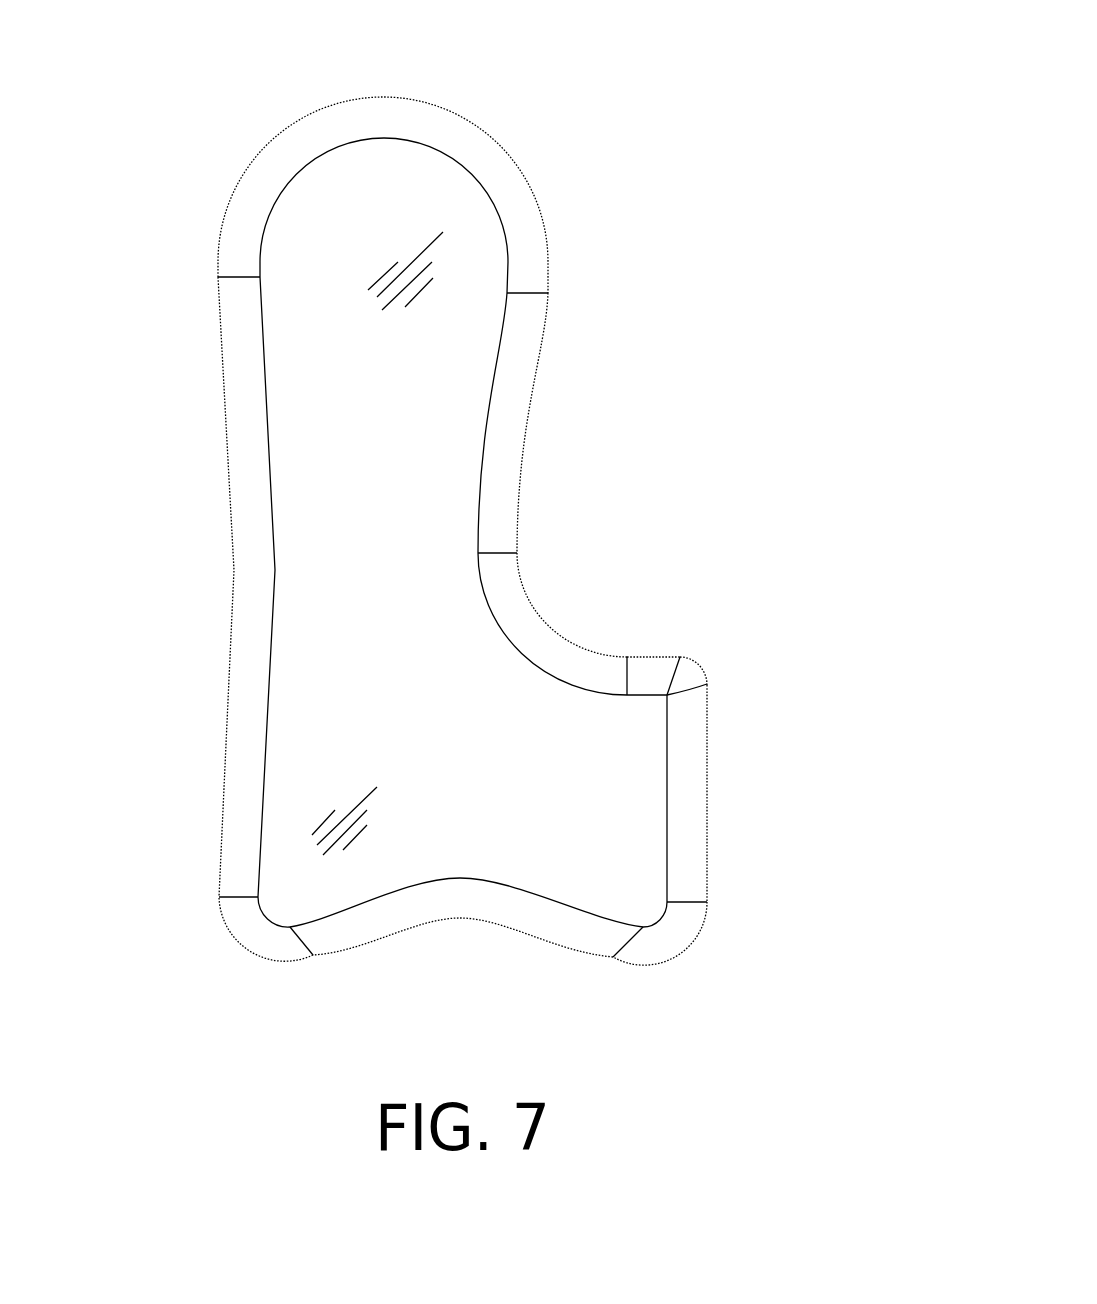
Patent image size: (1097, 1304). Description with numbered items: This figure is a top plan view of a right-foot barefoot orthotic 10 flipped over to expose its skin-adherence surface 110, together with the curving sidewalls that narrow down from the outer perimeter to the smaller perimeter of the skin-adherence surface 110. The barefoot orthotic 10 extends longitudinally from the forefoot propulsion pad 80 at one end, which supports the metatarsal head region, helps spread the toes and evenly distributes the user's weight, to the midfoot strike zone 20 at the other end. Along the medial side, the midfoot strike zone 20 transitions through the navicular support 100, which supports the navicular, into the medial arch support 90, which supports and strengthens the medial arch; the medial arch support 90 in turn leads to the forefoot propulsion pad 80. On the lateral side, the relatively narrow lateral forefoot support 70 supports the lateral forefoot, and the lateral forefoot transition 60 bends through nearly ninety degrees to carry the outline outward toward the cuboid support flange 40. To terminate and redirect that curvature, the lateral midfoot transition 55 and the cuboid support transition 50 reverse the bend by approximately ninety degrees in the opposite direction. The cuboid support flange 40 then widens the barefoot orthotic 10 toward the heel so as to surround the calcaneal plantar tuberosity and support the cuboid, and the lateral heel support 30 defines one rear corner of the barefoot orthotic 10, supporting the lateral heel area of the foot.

The barefoot orthotic 10 is at (712, 58).
The midfoot strike zone 20 is at (452, 963).
The lateral heel support 30 is at (706, 986).
The cuboid support flange 40 is at (756, 802).
The cuboid support transition 50 is at (732, 641).
The lateral midfoot transition 55 is at (651, 624).
The lateral forefoot transition 60 is at (591, 573).
The lateral forefoot support 70 is at (580, 383).
The forefoot propulsion pad 80 is at (362, 42).
The medial arch support 90 is at (178, 512).
The navicular support 100 is at (213, 999).
The skin-adherence surface 110 is at (422, 742).